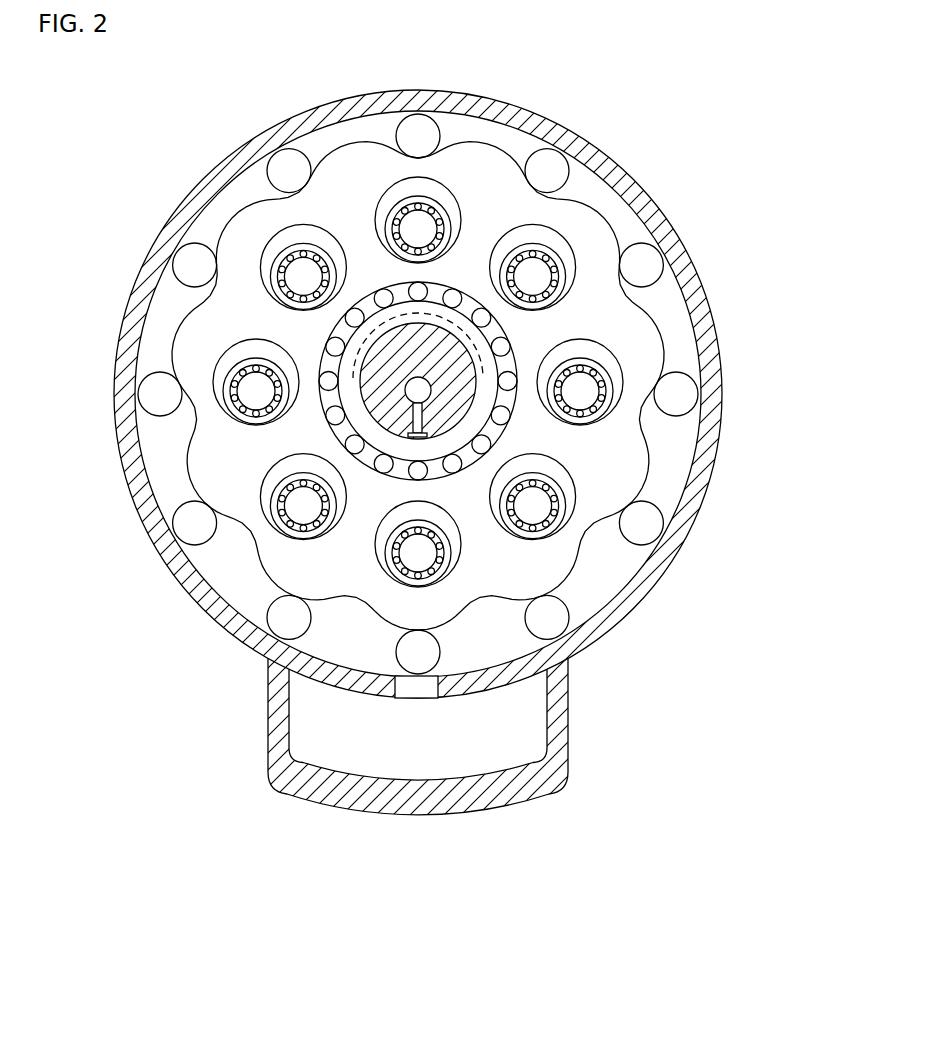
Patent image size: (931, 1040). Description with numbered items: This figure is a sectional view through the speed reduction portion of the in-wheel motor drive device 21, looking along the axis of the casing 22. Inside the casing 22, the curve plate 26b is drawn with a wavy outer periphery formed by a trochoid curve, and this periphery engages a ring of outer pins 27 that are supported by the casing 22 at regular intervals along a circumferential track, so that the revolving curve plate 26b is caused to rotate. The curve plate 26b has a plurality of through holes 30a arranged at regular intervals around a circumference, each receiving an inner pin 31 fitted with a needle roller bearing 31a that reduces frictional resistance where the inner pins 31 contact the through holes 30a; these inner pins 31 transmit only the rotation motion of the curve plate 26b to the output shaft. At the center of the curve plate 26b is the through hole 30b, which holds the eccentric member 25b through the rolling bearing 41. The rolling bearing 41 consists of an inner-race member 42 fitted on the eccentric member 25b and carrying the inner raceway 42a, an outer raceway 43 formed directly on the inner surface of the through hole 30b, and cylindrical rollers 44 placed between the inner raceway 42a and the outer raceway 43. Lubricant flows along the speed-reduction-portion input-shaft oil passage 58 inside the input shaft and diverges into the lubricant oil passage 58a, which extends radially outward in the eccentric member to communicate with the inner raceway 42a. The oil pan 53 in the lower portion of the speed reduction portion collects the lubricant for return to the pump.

The in-wheel motor drive device 21 is at (558, 116).
The casing 22 is at (613, 172).
The eccentric member 25b is at (455, 388).
The curve plate 26b is at (203, 337).
The outer pins 27 is at (195, 263).
The through holes 30a is at (284, 242).
The through hole 30b is at (330, 353).
The inner pins 31 is at (421, 228).
The needle roller bearing 31a is at (596, 372).
The rolling bearing 41 is at (365, 433).
The inner-race member 42 is at (302, 500).
The inner raceway 42a is at (478, 444).
The outer raceway 43 is at (380, 288).
The cylindrical rollers 44 is at (498, 333).
The oil pan 53 is at (347, 748).
The speed-reduction-portion input-shaft oil passage 58 is at (424, 391).
The lubricant oil passage 58a is at (426, 418).